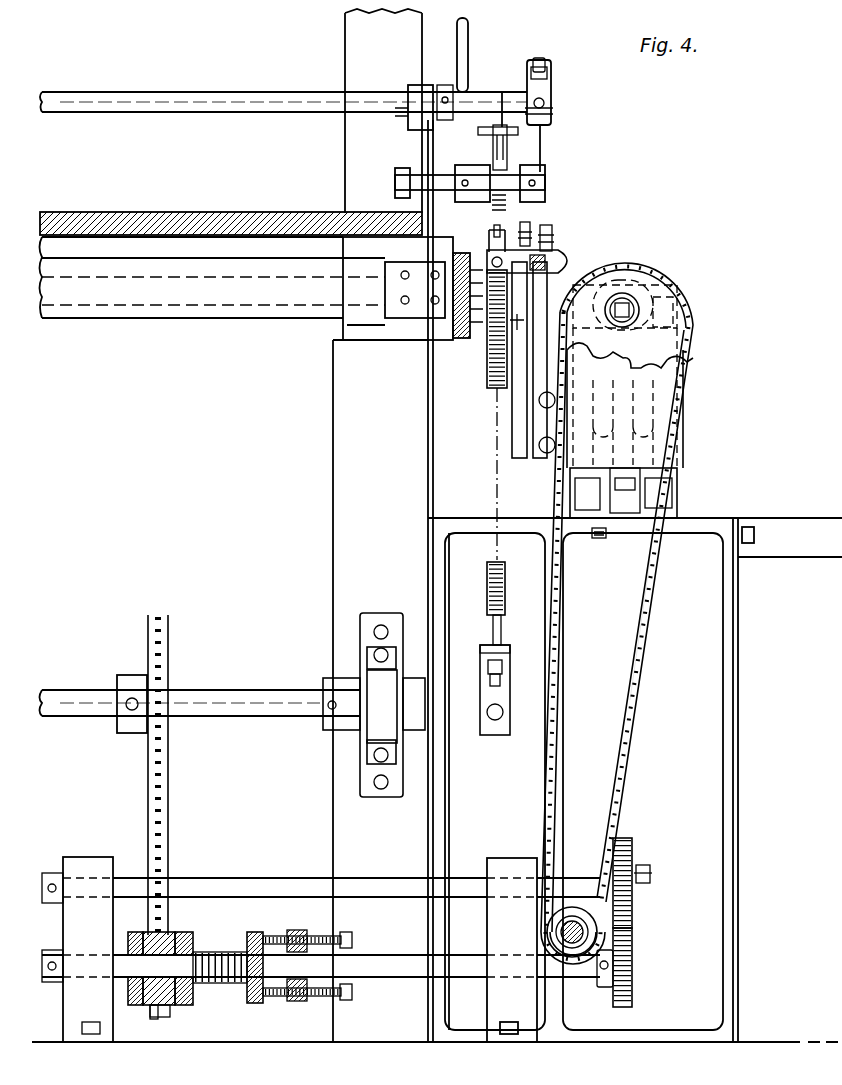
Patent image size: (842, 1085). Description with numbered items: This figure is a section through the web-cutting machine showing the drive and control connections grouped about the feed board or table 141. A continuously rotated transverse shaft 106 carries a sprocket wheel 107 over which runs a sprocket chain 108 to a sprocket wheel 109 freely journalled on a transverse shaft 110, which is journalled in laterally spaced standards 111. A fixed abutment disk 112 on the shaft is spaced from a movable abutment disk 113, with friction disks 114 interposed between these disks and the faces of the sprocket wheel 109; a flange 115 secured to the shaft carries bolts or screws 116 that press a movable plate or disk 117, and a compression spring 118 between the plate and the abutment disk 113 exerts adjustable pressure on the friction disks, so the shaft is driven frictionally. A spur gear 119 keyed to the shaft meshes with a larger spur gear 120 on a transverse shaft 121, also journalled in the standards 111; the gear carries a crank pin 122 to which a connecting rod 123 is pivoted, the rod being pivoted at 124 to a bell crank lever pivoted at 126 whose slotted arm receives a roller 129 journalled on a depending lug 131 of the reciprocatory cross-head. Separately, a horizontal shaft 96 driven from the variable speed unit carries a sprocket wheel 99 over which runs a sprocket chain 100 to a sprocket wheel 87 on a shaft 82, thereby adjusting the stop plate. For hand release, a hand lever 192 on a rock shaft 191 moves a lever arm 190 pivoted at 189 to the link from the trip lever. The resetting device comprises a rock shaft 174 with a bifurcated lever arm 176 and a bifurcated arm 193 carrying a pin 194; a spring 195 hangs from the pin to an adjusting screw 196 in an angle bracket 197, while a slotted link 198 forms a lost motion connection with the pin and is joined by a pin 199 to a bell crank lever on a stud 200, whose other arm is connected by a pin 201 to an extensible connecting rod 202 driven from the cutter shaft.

The shaft 82 is at (610, 334).
The sprocket wheel 87 is at (684, 374).
The horizontal shaft 96 is at (571, 910).
The sprocket wheel 99 is at (577, 944).
The sprocket chain 100 is at (632, 700).
The transverse shaft 106 is at (268, 672).
The sprocket wheel 107 is at (130, 675).
The sprocket chain 108 is at (168, 796).
The sprocket wheel 109 is at (172, 1006).
The transverse shaft 110 is at (372, 978).
The standards 111 is at (92, 856).
The fixed abutment disk 112 is at (134, 1002).
The movable abutment disk 113 is at (194, 1000).
The friction disks 114 is at (138, 932).
The flange 115 is at (312, 922).
The bolts or screws 116 is at (278, 934).
The movable plate or disk 117 is at (256, 1004).
The compression spring 118 is at (244, 946).
The spur gear 119 is at (634, 992).
The spur gear 120 is at (634, 914).
The transverse shaft 121 is at (372, 900).
The crank pin 122 is at (652, 874).
The connecting rod 123 is at (642, 808).
The pivot 124 is at (660, 468).
The pivot 126 is at (628, 515).
The roller 129 is at (678, 442).
The depending lug 131 is at (683, 410).
The feed board or table 141 is at (178, 213).
The rock shaft 174 is at (553, 252).
The bifurcated lever arm 176 is at (598, 244).
The pivot 189 is at (532, 66).
The lever arm 190 is at (551, 72).
The rock shaft 191 is at (302, 96).
The hand lever 192 is at (468, 32).
The bifurcated arm 193 is at (556, 230).
The pin 194 is at (486, 252).
The spring 195 is at (487, 378).
The adjusting screw 196 is at (499, 628).
The angle bracket 197 is at (480, 647).
The slotted link 198 is at (540, 212).
The pin 199 is at (535, 190).
The stud 200 is at (445, 175).
The pin 201 is at (518, 131).
The extensible connecting rod 202 is at (506, 88).